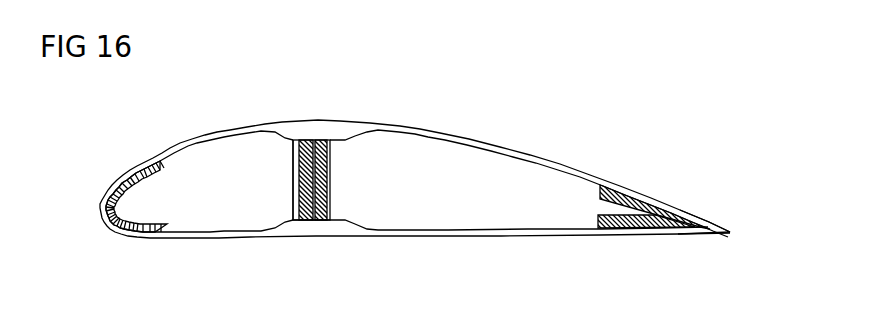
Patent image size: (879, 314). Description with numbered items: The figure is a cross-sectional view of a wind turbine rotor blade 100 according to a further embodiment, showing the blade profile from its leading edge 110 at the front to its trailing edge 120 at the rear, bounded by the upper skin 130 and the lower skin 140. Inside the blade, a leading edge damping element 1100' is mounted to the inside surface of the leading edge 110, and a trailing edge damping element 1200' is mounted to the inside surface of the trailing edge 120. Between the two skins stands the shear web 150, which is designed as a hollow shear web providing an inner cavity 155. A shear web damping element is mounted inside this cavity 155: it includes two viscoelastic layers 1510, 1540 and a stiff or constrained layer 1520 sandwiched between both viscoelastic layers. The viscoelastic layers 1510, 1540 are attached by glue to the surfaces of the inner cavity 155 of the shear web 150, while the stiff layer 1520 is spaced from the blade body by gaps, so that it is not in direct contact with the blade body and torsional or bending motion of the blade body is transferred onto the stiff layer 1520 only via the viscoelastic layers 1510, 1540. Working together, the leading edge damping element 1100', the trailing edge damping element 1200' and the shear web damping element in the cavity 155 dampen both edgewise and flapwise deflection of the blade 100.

The rotor blade 100 is at (592, 100).
The leading edge 110 is at (100, 208).
The trailing edge 120 is at (731, 231).
The suction side (upper skin) 130 is at (501, 138).
The pressure side (lower skin) 140 is at (498, 237).
The shear web 150 is at (296, 180).
The inner cavity 155 is at (295, 118).
The leading edge damping element 1100' is at (127, 166).
The trailing edge damping element 1200' is at (653, 179).
The viscoelastic layer 1510 is at (294, 206).
The stiff layer 1520 is at (312, 222).
The viscoelastic layer 1540 is at (330, 189).